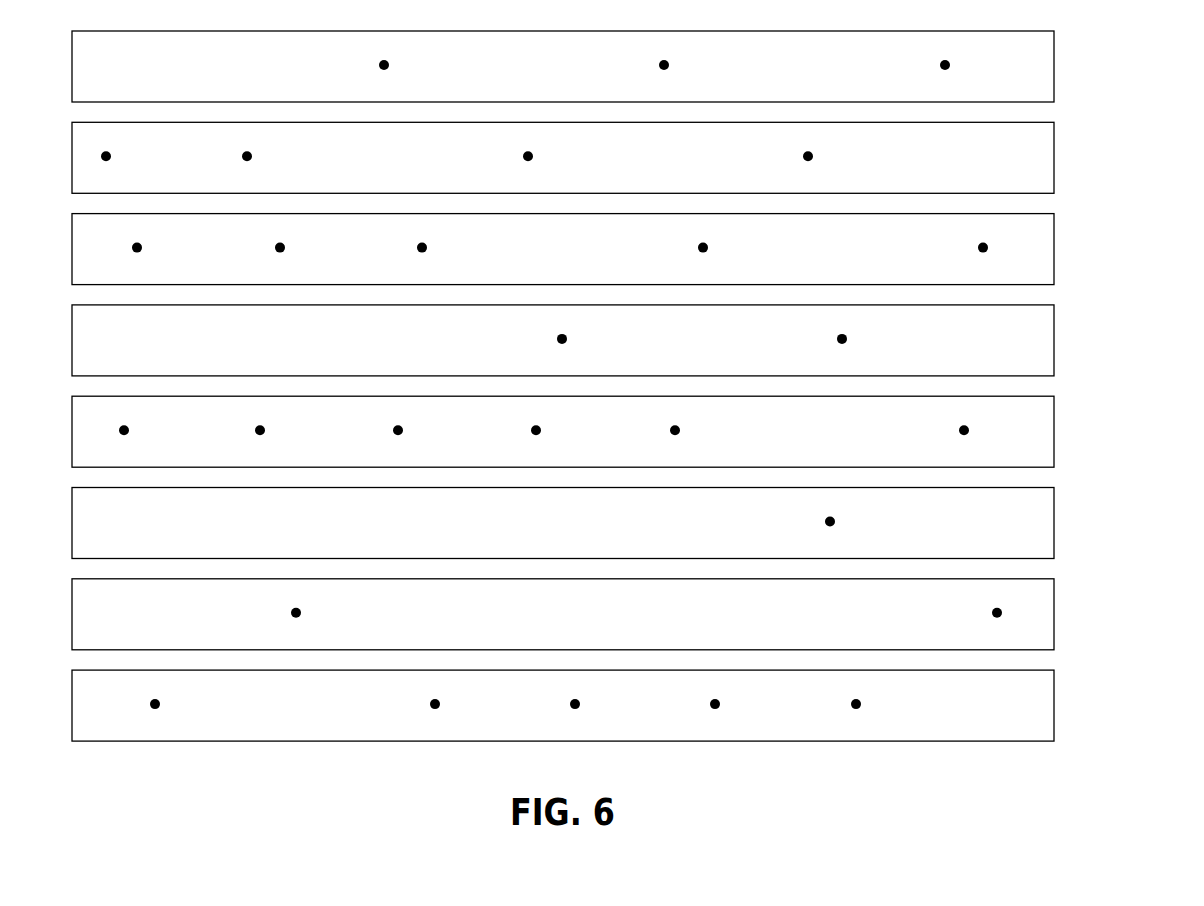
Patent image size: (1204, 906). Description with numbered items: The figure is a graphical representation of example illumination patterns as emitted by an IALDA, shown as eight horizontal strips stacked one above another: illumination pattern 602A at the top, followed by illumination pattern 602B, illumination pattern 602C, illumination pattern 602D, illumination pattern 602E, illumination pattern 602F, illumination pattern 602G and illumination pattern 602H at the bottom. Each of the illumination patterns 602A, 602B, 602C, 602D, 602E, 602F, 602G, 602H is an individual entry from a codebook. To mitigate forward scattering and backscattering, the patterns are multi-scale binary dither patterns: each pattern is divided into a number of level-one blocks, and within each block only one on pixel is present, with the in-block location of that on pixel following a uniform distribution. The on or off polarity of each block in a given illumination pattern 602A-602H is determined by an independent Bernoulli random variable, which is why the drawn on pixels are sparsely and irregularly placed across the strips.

The illumination pattern 602A is at (1054, 63).
The illumination pattern 602B is at (1054, 154).
The illumination pattern 602C is at (1054, 246).
The illumination pattern 602D is at (1054, 337).
The illumination pattern 602E is at (1054, 428).
The illumination pattern 602F is at (1054, 520).
The illumination pattern 602G is at (1054, 611).
The illumination pattern 602H is at (1054, 702).